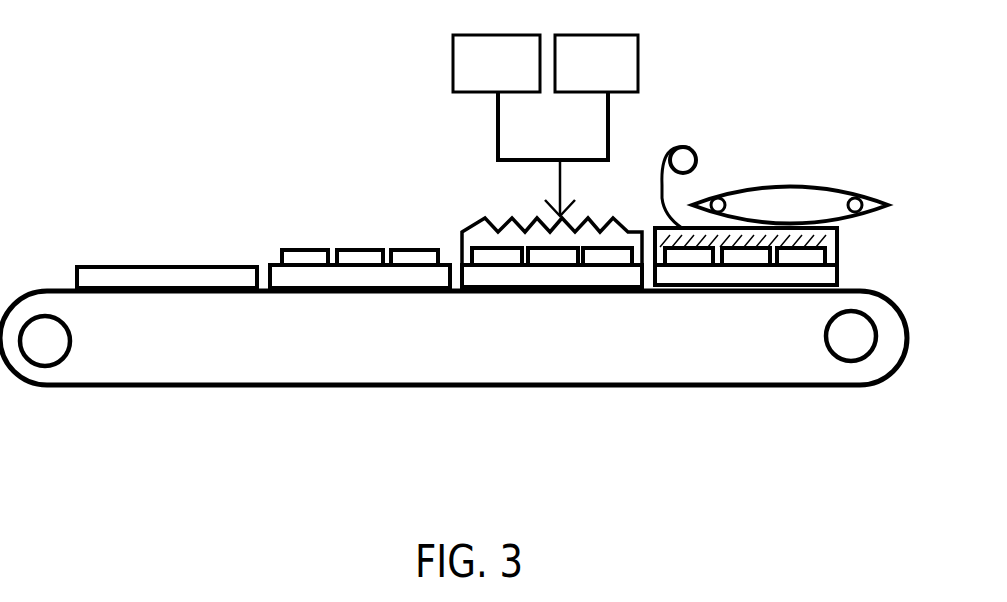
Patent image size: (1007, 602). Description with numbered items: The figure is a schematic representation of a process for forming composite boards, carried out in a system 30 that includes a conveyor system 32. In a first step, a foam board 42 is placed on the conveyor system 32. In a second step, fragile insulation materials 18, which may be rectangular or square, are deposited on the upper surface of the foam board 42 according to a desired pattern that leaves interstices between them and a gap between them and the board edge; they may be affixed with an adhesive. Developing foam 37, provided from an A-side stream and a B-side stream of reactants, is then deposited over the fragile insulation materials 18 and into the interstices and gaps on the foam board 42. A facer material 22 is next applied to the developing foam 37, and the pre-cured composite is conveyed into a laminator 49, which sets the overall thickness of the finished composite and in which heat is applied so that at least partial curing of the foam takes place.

The system 30 is at (220, 90).
The conveyor system 32 is at (182, 392).
The foam board 42 is at (170, 260).
The fragile insulation materials 18 is at (303, 245).
The developing foam 37 is at (477, 229).
The facer material 22 is at (705, 162).
The laminator 49 is at (828, 182).